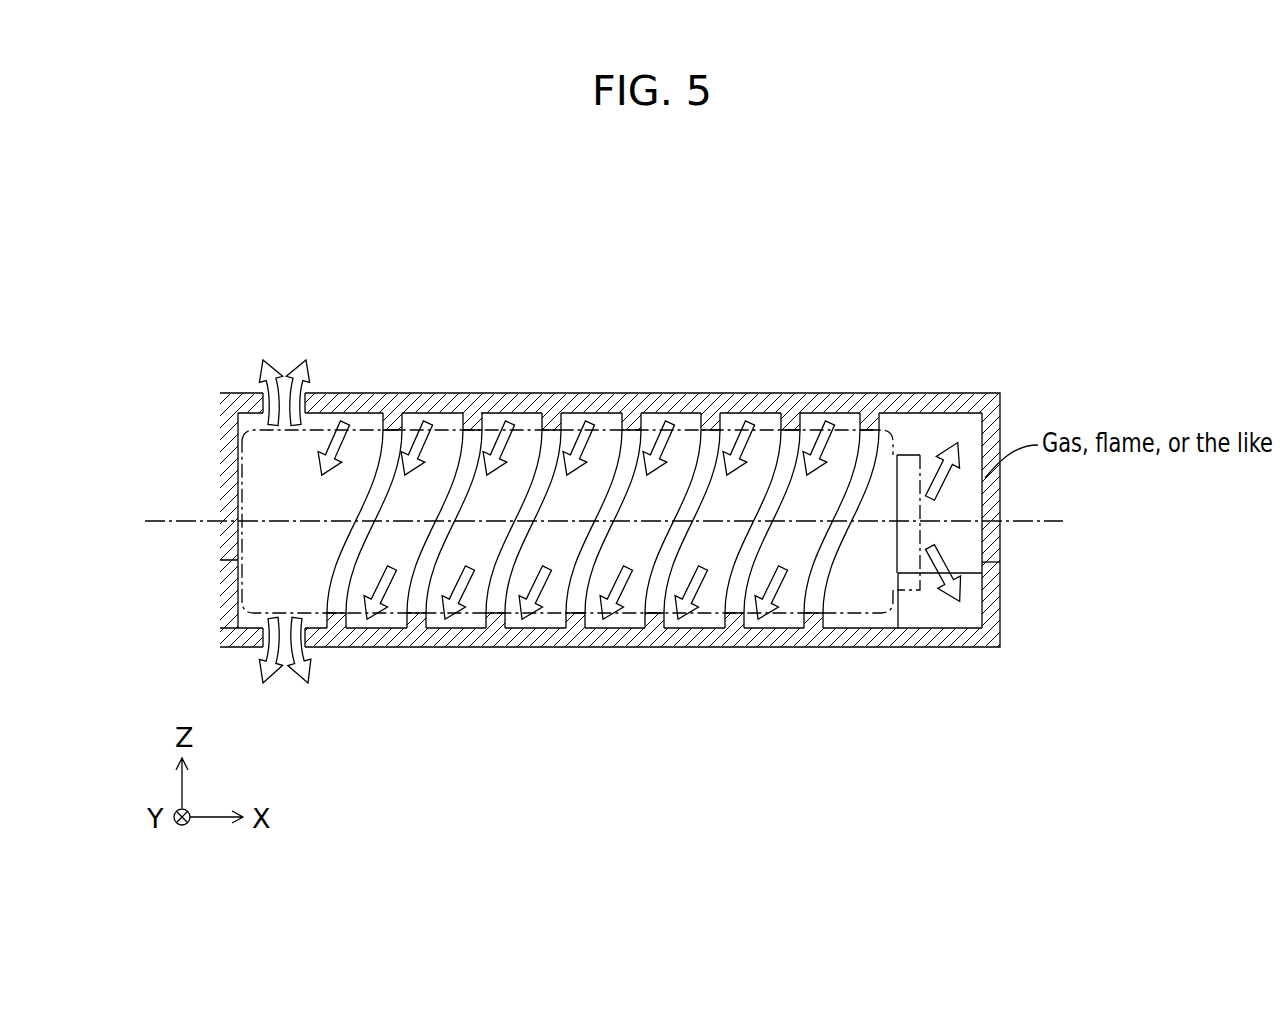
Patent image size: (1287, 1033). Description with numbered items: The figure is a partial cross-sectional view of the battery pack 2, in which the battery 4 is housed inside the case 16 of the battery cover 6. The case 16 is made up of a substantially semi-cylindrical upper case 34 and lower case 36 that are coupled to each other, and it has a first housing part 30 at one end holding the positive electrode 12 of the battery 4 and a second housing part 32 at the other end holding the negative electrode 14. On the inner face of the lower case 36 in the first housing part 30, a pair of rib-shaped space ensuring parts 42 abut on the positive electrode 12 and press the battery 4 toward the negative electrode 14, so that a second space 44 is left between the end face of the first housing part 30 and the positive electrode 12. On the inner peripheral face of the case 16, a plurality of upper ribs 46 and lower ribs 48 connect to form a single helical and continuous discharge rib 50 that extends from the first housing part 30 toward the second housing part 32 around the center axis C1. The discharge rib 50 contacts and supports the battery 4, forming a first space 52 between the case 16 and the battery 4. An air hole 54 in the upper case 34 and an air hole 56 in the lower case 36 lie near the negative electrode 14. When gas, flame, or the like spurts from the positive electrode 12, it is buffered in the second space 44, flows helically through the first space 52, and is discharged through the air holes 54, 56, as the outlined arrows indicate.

The battery pack 2 is at (744, 254).
The battery 4 is at (850, 593).
The battery cover 6 is at (848, 397).
The positive electrode 12 is at (933, 453).
The negative electrode 14 is at (240, 459).
The case 16 is at (1078, 546).
The first housing part 30 is at (915, 640).
The second housing part 32 is at (240, 637).
The upper case 34 is at (1002, 540).
The lower case 36 is at (1000, 580).
The space ensuring parts 42 is at (963, 612).
The second space 44 is at (965, 505).
The upper ribs 46 is at (788, 420).
The lower ribs 48 is at (725, 620).
The discharge rib 50 is at (658, 597).
The first space 52 is at (662, 420).
The air hole 54 is at (268, 405).
The air hole 56 is at (267, 648).
The center axis C1 is at (1070, 523).